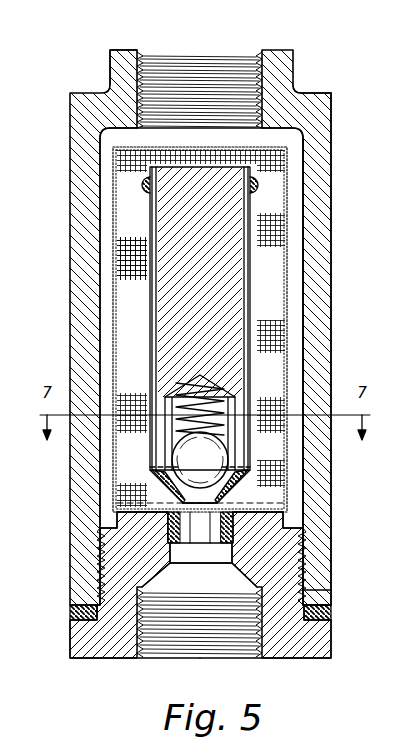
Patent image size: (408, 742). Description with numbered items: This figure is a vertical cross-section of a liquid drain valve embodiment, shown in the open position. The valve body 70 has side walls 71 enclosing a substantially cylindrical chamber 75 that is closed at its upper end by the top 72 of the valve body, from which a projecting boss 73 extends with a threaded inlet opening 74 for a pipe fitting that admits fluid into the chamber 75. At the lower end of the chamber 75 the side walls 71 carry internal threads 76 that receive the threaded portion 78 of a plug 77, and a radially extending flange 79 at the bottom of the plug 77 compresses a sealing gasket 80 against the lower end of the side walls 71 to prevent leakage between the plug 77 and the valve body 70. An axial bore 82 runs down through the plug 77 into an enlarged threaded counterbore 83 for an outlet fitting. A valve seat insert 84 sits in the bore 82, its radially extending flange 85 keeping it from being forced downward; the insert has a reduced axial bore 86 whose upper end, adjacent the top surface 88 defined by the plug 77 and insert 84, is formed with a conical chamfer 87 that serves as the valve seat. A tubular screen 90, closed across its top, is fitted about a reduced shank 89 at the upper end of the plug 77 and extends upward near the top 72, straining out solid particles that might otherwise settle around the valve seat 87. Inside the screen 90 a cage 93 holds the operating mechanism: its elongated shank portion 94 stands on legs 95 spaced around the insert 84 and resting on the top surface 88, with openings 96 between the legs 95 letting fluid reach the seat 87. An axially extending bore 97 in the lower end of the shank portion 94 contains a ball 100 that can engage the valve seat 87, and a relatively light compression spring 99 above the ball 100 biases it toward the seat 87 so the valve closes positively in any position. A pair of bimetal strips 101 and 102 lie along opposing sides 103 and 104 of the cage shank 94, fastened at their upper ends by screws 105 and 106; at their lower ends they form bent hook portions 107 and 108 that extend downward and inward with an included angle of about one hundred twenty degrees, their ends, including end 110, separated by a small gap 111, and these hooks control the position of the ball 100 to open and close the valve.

The valve body 70 is at (70, 183).
The side walls 71 is at (320, 283).
The top 72 is at (306, 98).
The projecting boss 73 is at (122, 50).
The threaded inlet opening 74 is at (208, 52).
The chamber 75 is at (290, 181).
The internal threads 76 is at (100, 575).
The plug 77 is at (290, 657).
The threaded portion 78 is at (322, 598).
The radially extending flange 79 is at (72, 642).
The sealing gasket 80 is at (72, 612).
The axial bore 82 is at (199, 575).
The threaded counterbore 83 is at (160, 654).
The valve seat insert 84 is at (214, 533).
The radially extending flange 85 is at (142, 520).
The reduced axial bore 86 is at (201, 554).
The conical chamfer 87 is at (258, 520).
The top surface 88 is at (287, 512).
The reduced shank 89 is at (112, 522).
The screen 90 is at (113, 432).
The cage 93 is at (200, 335).
The shank portion 94 is at (250, 268).
The legs 95 is at (237, 503).
The openings 96 is at (167, 494).
The axially extending bore 97 is at (238, 412).
The compression spring 99 is at (200, 377).
The ball 100 is at (189, 468).
The bimetal strip 101 is at (152, 318).
The bimetal strip 102 is at (250, 300).
The side 103 is at (158, 345).
The side 104 is at (240, 312).
The screw 105 is at (135, 383).
The screw 106 is at (246, 212).
The bent hook portion 107 is at (158, 466).
The bent hook portion 108 is at (244, 466).
The end 110 is at (242, 492).
The gap 111 is at (201, 566).